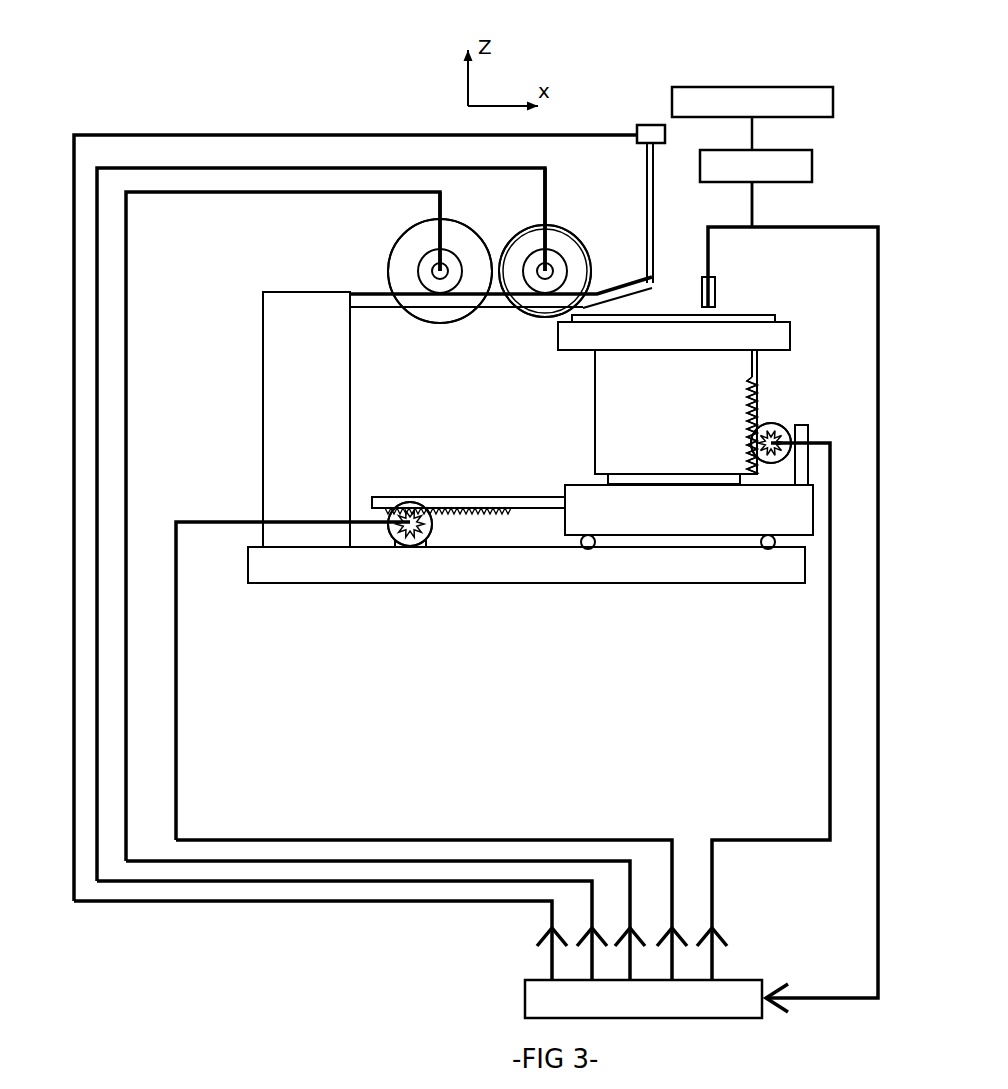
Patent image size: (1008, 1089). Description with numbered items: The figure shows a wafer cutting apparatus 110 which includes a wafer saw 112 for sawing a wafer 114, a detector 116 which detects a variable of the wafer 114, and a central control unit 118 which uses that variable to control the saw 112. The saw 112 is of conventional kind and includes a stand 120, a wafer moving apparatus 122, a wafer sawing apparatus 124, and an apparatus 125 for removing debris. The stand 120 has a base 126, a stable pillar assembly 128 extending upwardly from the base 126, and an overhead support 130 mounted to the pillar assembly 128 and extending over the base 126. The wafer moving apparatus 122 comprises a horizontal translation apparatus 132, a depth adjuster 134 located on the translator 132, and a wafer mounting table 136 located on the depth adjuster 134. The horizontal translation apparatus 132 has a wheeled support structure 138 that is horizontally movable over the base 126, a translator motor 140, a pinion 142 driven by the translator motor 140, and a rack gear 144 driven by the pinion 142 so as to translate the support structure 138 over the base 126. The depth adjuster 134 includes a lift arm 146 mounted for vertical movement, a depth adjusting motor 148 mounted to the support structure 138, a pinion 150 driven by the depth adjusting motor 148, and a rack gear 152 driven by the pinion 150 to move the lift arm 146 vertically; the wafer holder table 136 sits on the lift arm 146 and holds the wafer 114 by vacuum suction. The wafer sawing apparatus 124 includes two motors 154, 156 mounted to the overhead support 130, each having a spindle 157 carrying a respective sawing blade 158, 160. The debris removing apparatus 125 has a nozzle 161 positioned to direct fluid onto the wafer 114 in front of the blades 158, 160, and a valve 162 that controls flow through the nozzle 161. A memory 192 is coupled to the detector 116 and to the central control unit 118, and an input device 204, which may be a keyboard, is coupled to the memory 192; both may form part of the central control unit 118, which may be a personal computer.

The wafer cutting apparatus 110 is at (178, 122).
The wafer saw 112 is at (248, 283).
The wafer 114 is at (720, 318).
The detector 116 is at (716, 291).
The central control unit 118 is at (546, 983).
The stand 120 is at (263, 406).
The wafer moving apparatus 122 is at (540, 425).
The wafer sawing apparatus 124 is at (607, 188).
The apparatus for removing debris 125 is at (714, 210).
The base 126 is at (250, 561).
The stable pillar assembly 128 is at (350, 366).
The overhead support 130 is at (539, 227).
The horizontal translation apparatus 132 is at (406, 480).
The depth adjuster 134 is at (796, 396).
The wafer mounting table 136 is at (791, 336).
The wheeled support structure 138 is at (582, 491).
The translator motor 140 is at (433, 526).
The pinion 142 is at (413, 520).
The rack gear 144 is at (505, 515).
The lift arm 146 is at (595, 400).
The depth adjusting motor 148 is at (772, 424).
The pinion 150 is at (772, 433).
The rack gear 152 is at (757, 396).
The motor 154 is at (560, 266).
The motor 156 is at (428, 262).
The spindle 157 is at (434, 278).
The sawing blade 158 is at (541, 229).
The sawing blade 160 is at (455, 226).
The nozzle 161 is at (623, 292).
The valve 162 is at (650, 125).
The memory 192 is at (812, 167).
The input device 204 is at (834, 103).